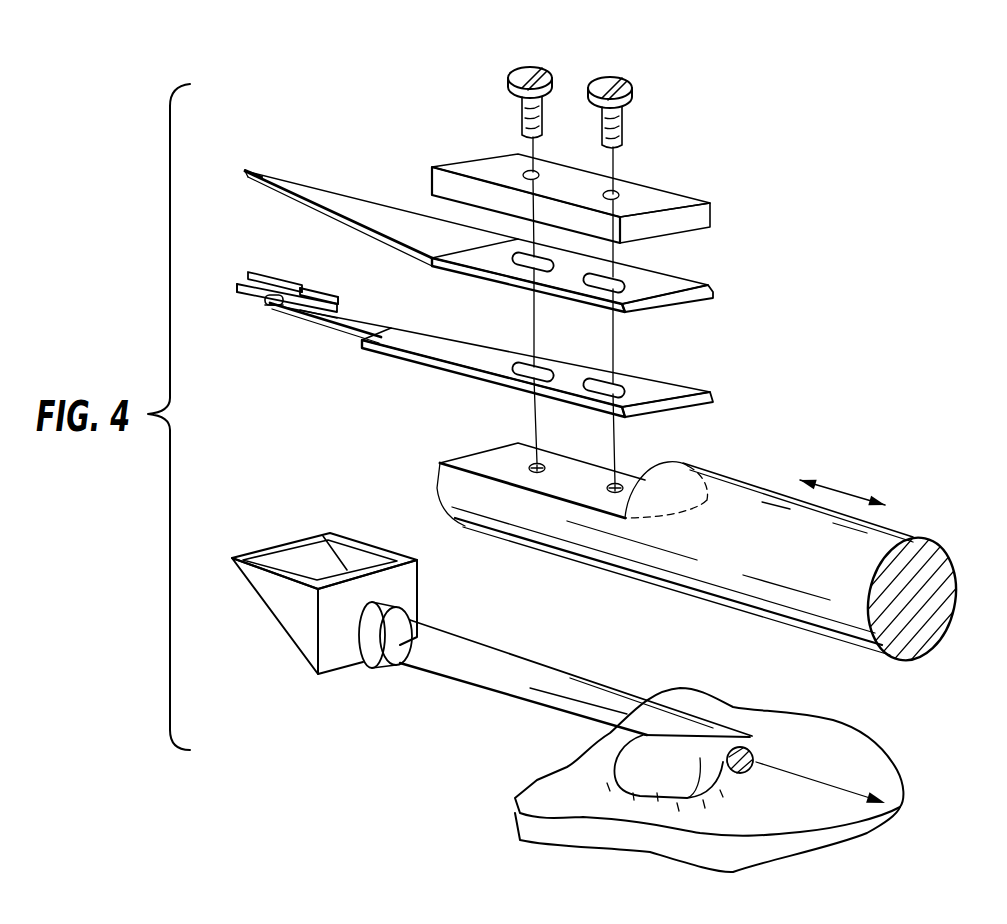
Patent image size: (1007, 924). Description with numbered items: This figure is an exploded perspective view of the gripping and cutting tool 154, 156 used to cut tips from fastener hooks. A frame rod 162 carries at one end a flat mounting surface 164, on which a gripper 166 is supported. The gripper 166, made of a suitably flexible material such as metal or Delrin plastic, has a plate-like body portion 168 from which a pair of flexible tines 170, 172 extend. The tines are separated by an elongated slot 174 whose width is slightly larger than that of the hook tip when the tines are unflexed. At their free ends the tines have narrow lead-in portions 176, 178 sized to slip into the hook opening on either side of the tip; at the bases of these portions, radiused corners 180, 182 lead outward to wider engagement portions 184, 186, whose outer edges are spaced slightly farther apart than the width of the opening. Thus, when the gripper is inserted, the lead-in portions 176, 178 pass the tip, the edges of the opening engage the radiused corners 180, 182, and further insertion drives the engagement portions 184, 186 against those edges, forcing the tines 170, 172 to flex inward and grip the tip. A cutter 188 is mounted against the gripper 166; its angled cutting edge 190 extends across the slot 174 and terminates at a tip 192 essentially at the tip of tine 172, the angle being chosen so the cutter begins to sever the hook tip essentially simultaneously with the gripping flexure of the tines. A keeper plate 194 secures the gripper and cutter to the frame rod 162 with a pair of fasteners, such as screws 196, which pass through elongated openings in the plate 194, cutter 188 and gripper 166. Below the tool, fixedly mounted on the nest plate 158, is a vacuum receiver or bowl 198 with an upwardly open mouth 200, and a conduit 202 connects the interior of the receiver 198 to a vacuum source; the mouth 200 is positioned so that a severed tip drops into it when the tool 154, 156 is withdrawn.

The gripping and cutting tool 154 is at (820, 226).
The gripping and cutting tool 156 is at (820, 226).
The nest plate 158 is at (867, 755).
The frame rod 162 is at (880, 540).
The flat mounting surface 164 is at (500, 461).
The gripper 166 is at (703, 389).
The plate-like body portion 168 is at (488, 351).
The flexible tine 170 is at (240, 282).
The flexible tine 172 is at (250, 272).
The elongated slot 174 is at (295, 287).
The lead-in portion 176 is at (240, 293).
The lead-in portion 178 is at (255, 272).
The radiused corner 180 is at (276, 305).
The radiused corner 182 is at (282, 270).
The engagement portion 184 is at (312, 310).
The engagement portion 186 is at (318, 290).
The cutter 188 is at (712, 288).
The angled cutting edge 190 is at (298, 185).
The tip 192 is at (246, 168).
The keeper plate 194 is at (668, 202).
The screws 196 is at (522, 72).
The vacuum receiver 198 is at (292, 637).
The mouth 200 is at (302, 536).
The conduit 202 is at (527, 672).